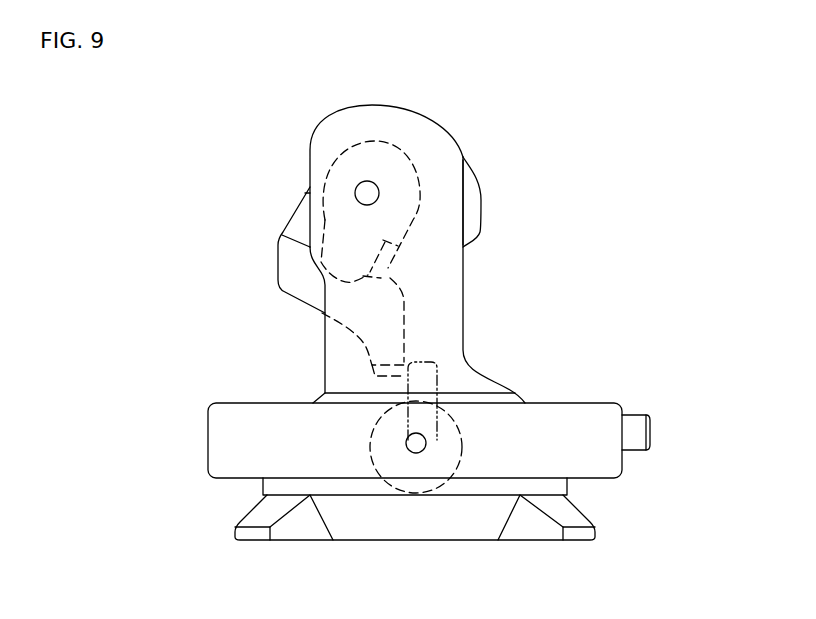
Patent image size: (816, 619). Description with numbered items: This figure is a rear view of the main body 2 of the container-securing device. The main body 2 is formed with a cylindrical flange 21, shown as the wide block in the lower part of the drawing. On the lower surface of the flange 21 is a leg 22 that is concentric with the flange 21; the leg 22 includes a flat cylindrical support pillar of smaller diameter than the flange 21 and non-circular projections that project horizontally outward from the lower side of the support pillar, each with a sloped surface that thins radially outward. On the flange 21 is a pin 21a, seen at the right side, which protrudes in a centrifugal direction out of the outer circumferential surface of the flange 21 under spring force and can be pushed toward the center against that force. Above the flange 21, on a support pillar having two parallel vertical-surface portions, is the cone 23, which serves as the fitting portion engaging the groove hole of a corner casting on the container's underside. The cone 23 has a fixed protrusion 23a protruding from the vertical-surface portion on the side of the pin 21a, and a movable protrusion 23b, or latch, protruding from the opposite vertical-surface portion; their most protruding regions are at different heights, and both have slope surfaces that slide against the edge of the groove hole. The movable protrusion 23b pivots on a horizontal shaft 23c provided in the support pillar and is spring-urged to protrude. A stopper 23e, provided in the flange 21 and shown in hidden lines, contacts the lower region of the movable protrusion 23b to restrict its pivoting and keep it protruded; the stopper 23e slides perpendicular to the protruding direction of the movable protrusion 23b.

The main body 2 is at (292, 132).
The flange 21 is at (612, 467).
The pin 21a is at (633, 432).
The leg 22 is at (270, 502).
The cone 23 is at (472, 169).
The fixed protrusion 23a is at (472, 212).
The movable protrusion 23b is at (282, 265).
The horizontal shaft 23c is at (362, 192).
The stopper 23e is at (440, 410).